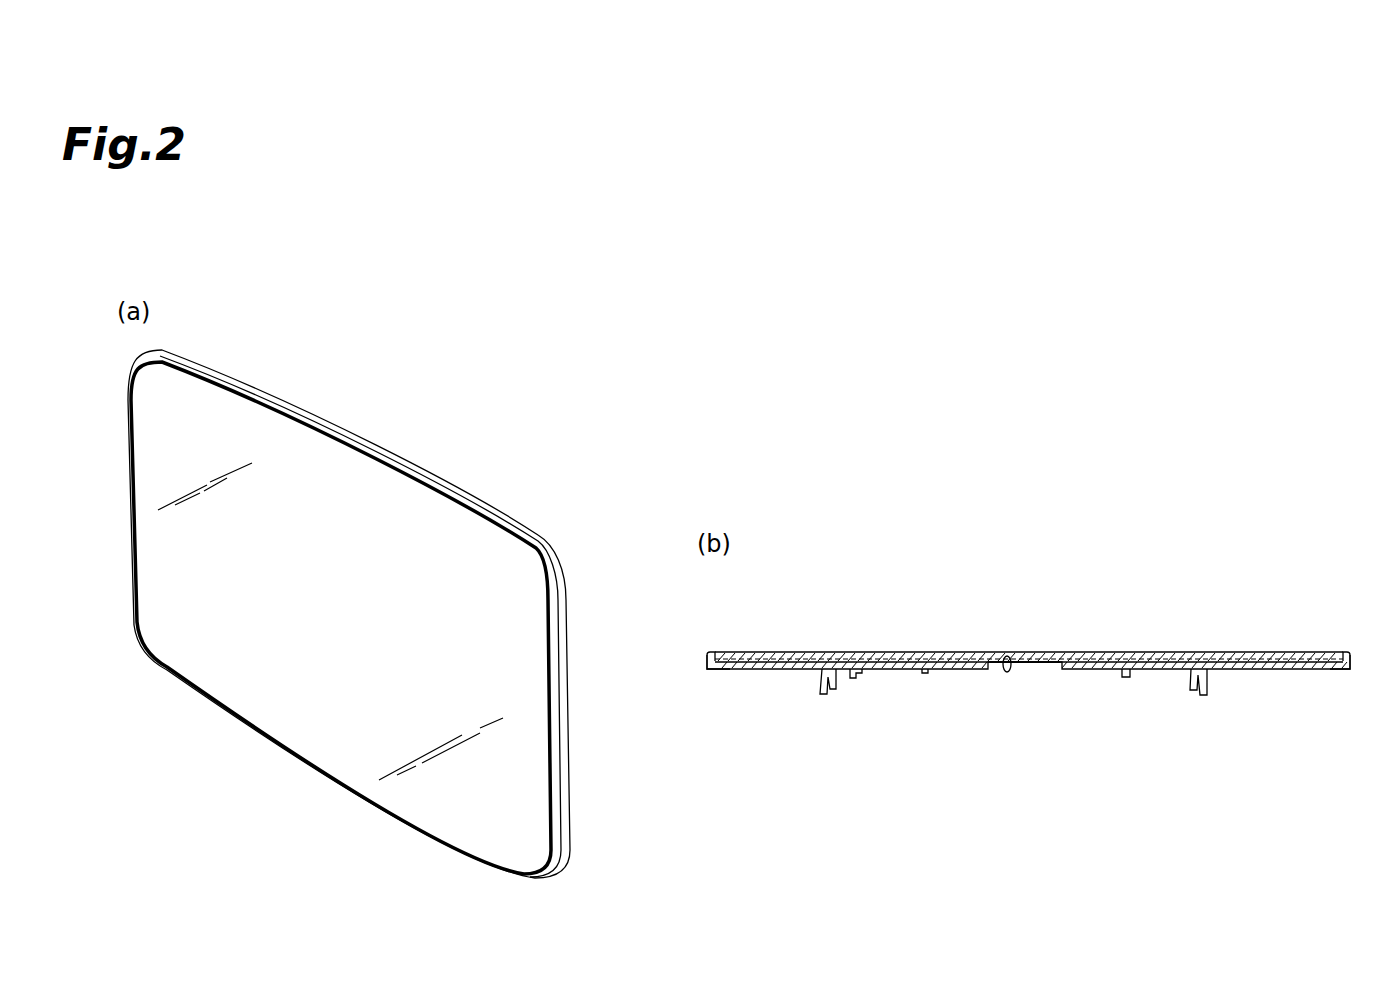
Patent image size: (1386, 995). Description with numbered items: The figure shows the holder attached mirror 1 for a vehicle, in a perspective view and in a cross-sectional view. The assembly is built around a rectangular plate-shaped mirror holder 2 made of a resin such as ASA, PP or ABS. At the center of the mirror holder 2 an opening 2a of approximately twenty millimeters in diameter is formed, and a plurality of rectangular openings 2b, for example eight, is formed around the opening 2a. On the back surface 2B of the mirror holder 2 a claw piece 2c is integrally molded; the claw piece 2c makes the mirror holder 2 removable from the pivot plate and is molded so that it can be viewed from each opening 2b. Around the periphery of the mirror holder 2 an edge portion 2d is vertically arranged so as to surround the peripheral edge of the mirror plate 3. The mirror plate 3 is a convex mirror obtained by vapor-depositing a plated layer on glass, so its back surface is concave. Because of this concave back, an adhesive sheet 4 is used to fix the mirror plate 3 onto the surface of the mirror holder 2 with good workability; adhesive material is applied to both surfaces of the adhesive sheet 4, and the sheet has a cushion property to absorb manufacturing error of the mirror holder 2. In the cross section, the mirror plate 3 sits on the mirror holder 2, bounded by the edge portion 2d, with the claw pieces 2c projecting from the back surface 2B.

The holder attached mirror 1 is at (462, 403).
The mirror holder 2 is at (545, 541).
The opening 2a is at (1029, 670).
The rectangular openings 2b is at (843, 672).
The back surface 2B is at (770, 672).
The claw piece 2c is at (822, 684).
The edge portion 2d is at (337, 418).
The mirror plate 3 is at (298, 720).
The adhesive sheet 4 is at (1006, 657).